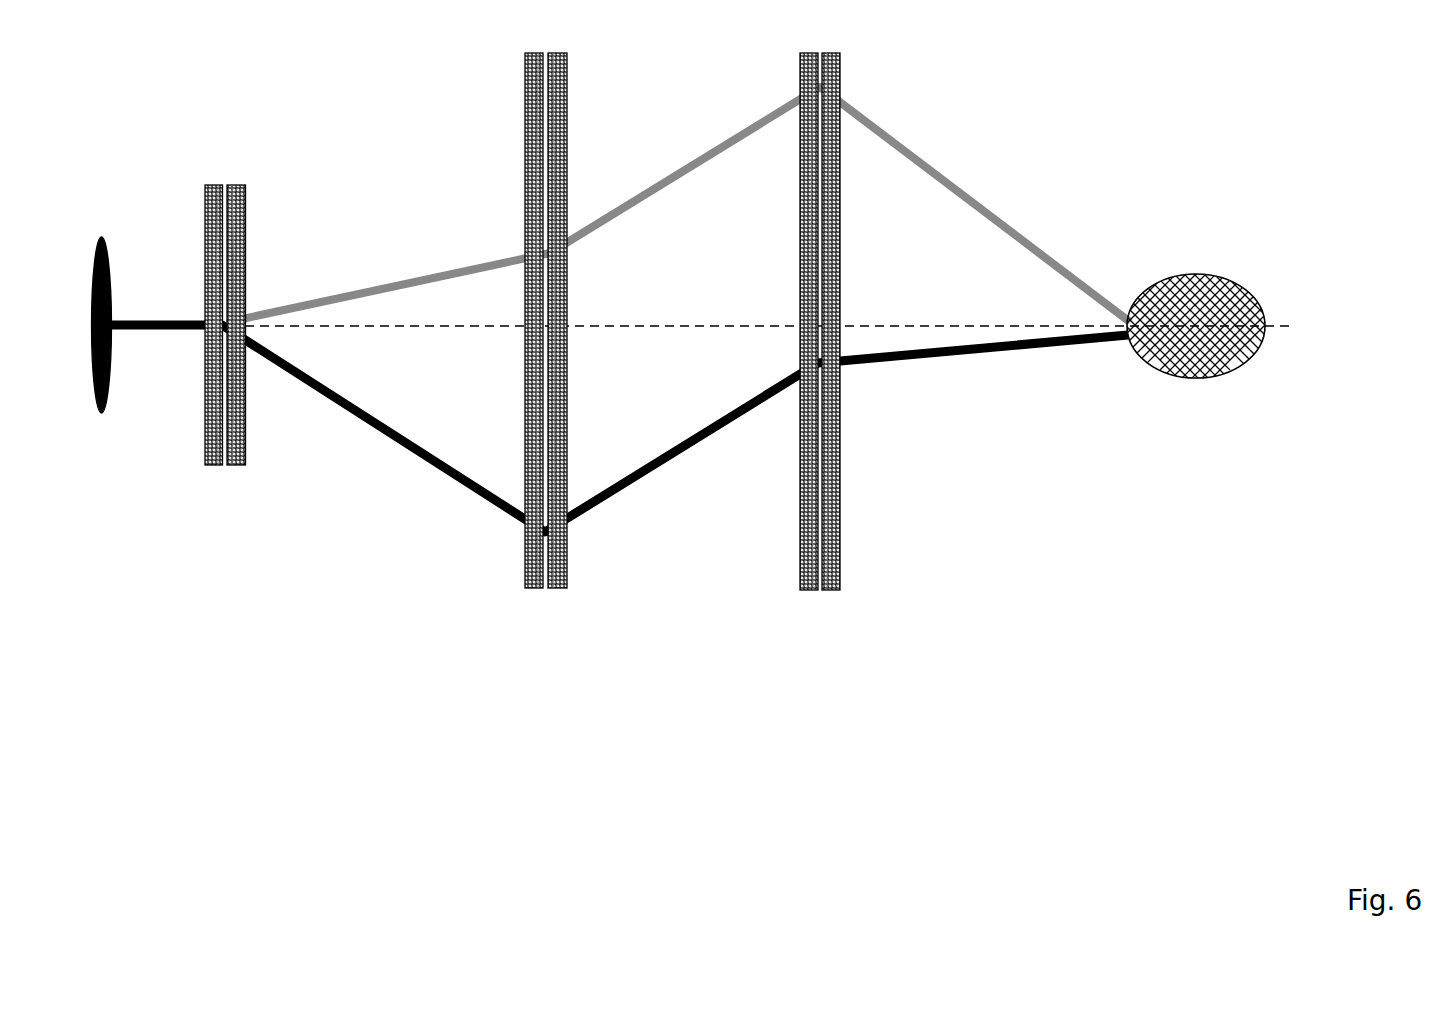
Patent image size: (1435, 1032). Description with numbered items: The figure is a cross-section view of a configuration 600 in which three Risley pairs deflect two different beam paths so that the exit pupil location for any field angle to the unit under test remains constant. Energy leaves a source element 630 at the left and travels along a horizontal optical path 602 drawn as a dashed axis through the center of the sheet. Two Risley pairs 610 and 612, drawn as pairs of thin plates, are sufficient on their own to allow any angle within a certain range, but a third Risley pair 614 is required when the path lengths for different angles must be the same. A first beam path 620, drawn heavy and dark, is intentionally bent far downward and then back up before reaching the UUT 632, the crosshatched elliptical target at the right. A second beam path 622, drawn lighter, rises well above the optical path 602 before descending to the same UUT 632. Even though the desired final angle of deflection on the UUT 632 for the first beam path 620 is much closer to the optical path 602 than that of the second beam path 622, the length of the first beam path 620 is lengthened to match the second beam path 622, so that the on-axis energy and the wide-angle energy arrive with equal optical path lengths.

The configuration 600 is at (180, 90).
The optical path 602 is at (727, 326).
The first Risley pair 610 is at (245, 472).
The second Risley pair 612 is at (567, 594).
The third Risley pair 614 is at (840, 596).
The first beam path 620 is at (355, 415).
The second beam path 622 is at (360, 292).
The light source 630 is at (97, 407).
The UUT 632 is at (1185, 370).